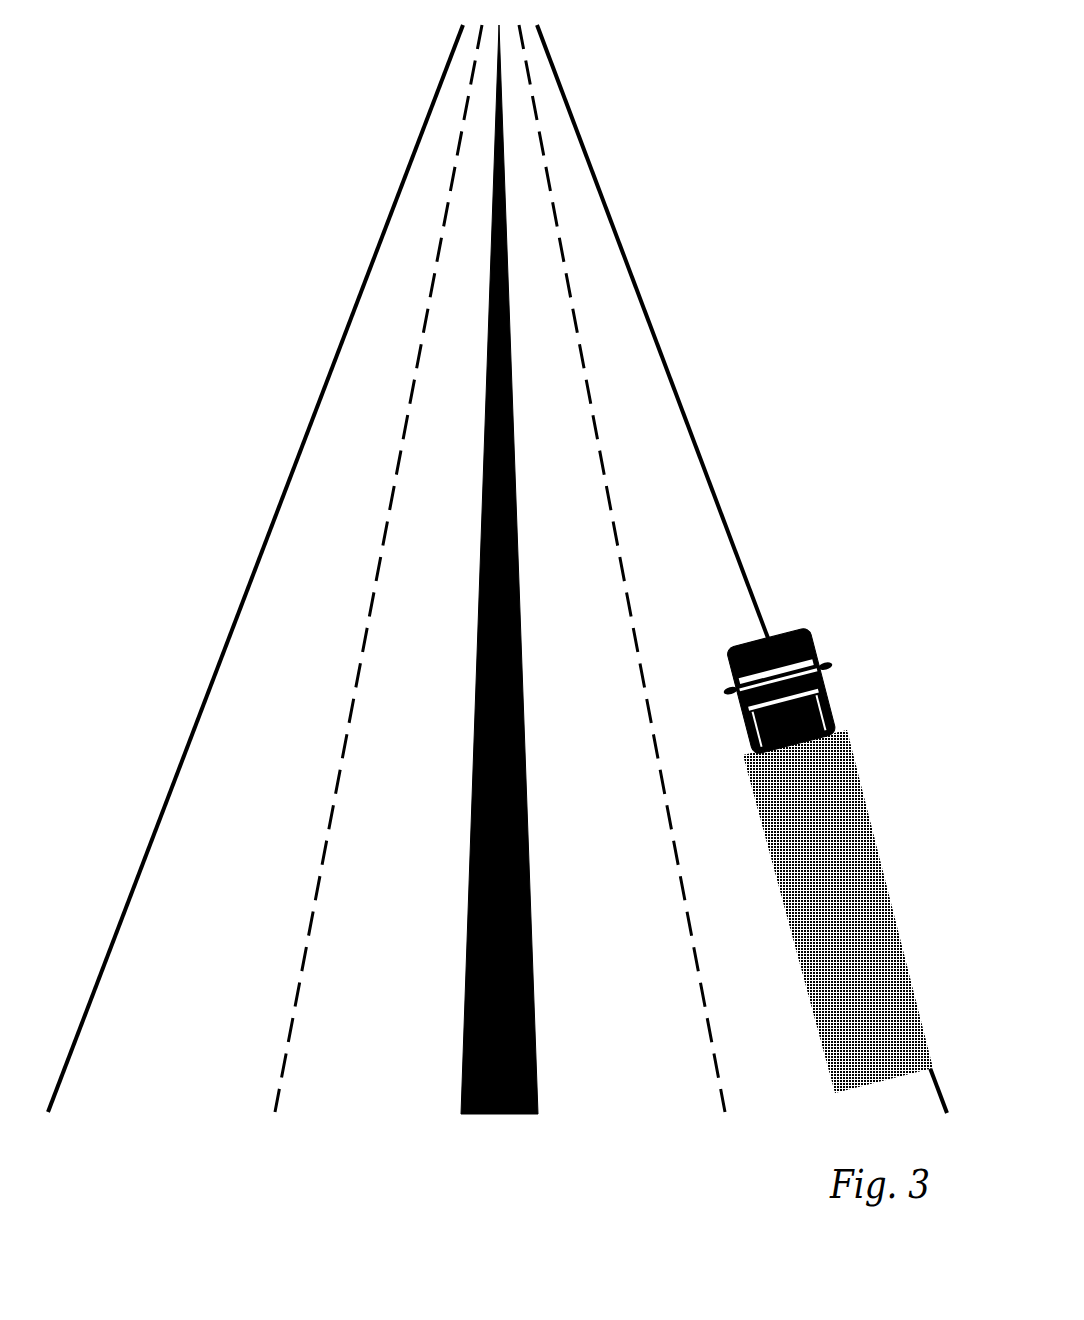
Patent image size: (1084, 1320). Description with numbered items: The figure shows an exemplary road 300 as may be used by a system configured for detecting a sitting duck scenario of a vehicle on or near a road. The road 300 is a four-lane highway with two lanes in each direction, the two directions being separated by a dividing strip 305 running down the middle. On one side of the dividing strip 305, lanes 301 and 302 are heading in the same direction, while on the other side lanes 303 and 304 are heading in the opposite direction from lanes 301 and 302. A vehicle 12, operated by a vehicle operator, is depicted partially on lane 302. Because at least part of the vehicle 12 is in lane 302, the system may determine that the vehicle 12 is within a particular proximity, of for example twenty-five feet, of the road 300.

The road 300 is at (778, 121).
The vehicle 12 is at (882, 616).
The lane 301 is at (640, 1072).
The lane 302 is at (823, 1106).
The lane 303 is at (415, 900).
The lane 304 is at (246, 900).
The dividing strip 305 is at (534, 1154).